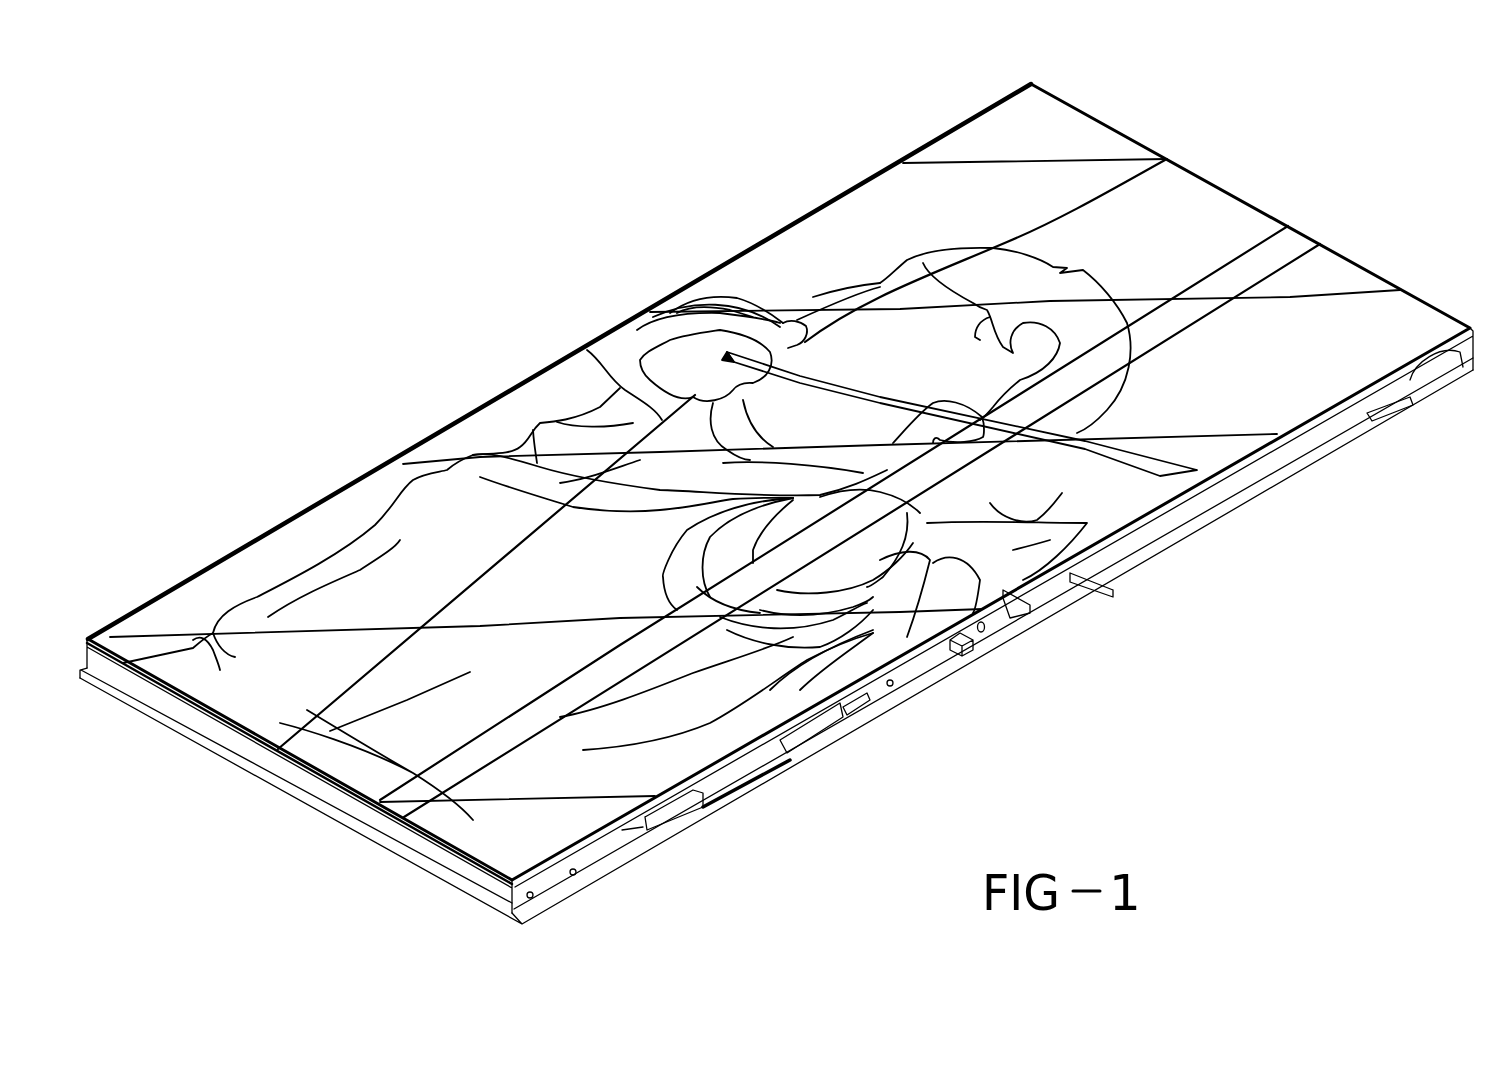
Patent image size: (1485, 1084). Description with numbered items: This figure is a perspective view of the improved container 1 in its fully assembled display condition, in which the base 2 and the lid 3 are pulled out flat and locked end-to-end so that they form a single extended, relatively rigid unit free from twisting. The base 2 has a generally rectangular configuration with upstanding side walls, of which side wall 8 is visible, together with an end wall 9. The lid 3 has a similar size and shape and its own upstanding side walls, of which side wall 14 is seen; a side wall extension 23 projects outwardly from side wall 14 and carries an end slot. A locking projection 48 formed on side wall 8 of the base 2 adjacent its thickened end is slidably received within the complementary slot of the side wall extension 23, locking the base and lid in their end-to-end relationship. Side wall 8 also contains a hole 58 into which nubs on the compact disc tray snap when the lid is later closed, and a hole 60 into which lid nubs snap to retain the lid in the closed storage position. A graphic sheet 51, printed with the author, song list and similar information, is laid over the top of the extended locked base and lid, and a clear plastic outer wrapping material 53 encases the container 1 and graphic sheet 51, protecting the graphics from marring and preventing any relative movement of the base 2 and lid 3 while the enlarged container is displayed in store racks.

The container 1 is at (545, 300).
The base 2 is at (430, 872).
The lid 3 is at (1322, 452).
The side wall 8 is at (670, 817).
The end wall 9 is at (228, 742).
The side wall 14 is at (1180, 517).
The side wall extension 23 is at (990, 630).
The locking projection 48 is at (975, 648).
The graphic sheet 51 is at (452, 470).
The outer wrapping material 53 is at (277, 558).
The hole 58 is at (538, 898).
The hole 60 is at (578, 875).